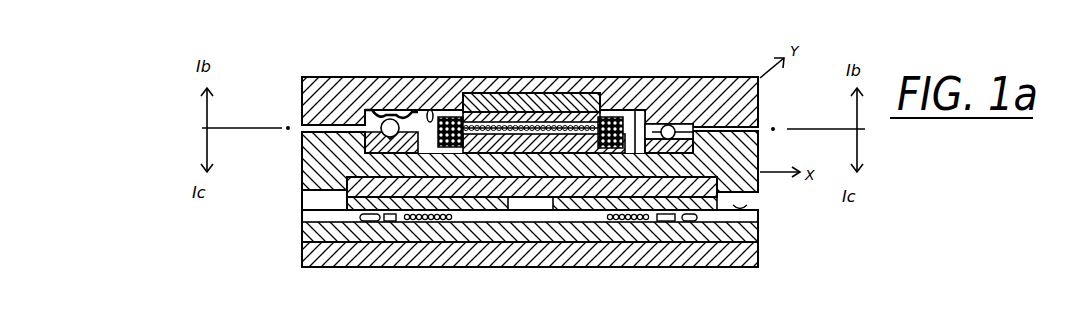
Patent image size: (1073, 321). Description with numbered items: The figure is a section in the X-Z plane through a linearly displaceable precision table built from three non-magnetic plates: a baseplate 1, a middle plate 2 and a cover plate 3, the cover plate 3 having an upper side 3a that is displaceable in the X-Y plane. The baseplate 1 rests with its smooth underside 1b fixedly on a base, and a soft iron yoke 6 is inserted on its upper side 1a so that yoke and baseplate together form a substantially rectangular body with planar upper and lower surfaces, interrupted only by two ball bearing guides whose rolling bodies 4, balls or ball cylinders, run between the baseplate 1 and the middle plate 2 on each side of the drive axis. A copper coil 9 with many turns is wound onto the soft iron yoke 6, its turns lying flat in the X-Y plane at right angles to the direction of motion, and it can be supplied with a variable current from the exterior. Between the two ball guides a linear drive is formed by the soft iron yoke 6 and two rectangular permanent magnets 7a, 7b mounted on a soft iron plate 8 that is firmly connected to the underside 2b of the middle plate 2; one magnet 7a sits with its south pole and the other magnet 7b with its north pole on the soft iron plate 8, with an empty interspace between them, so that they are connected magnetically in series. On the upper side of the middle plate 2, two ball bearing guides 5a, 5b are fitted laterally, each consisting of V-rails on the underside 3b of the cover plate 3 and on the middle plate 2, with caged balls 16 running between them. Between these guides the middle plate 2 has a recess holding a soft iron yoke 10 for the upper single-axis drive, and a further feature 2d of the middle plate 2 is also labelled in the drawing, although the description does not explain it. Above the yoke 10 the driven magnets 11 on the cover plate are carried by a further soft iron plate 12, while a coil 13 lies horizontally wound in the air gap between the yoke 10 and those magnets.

The baseplate 1 is at (326, 267).
The upper side of the baseplate 1a is at (758, 226).
The underside of the baseplate 1b is at (755, 268).
The middle plate 2 is at (302, 170).
The underside of the middle plate 2b is at (758, 199).
The passage of movable body 2d is at (636, 108).
The cover plate 3 is at (302, 106).
The upper side of the cover plate 3a is at (404, 92).
The underside of the cover plate 3b is at (431, 108).
The rolling bodies 4 is at (362, 223).
The ball bearing guide 5a is at (378, 110).
The ball bearing guide 5b is at (684, 112).
The soft iron yoke 6 is at (302, 232).
The magnet 7a is at (470, 211).
The magnet 7b is at (572, 211).
The soft iron plate 8 is at (528, 187).
The copper coil 9 is at (415, 223).
The soft iron yoke 10 is at (578, 125).
The driven magnets 11 is at (552, 118).
The soft iron plate 12 is at (505, 100).
The coil 13 is at (614, 117).
The balls 16 is at (668, 124).